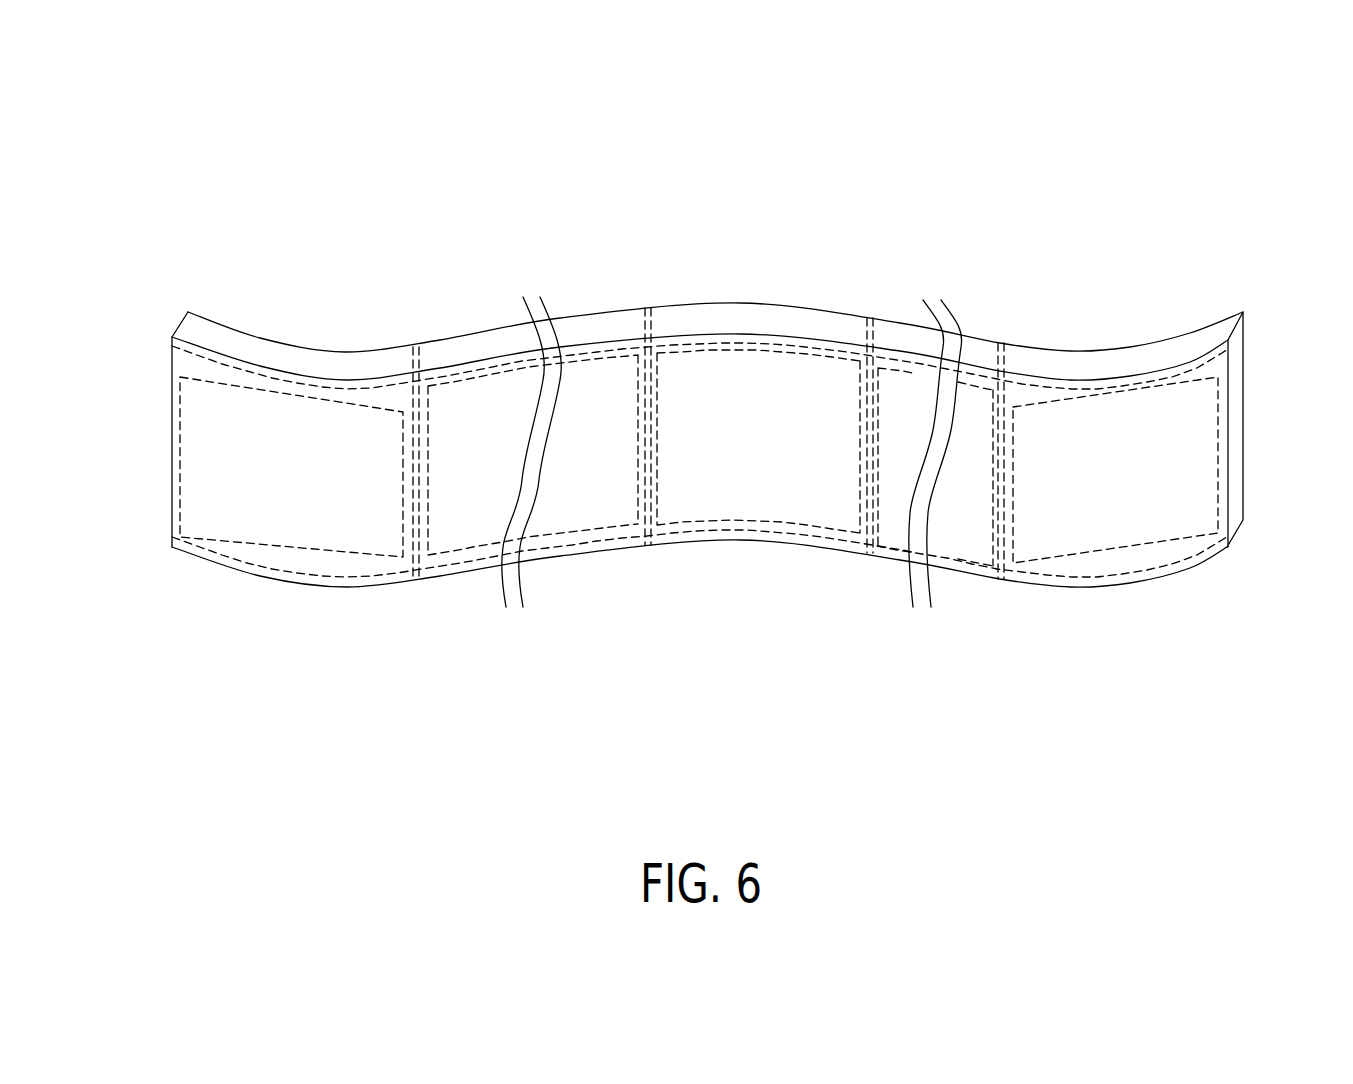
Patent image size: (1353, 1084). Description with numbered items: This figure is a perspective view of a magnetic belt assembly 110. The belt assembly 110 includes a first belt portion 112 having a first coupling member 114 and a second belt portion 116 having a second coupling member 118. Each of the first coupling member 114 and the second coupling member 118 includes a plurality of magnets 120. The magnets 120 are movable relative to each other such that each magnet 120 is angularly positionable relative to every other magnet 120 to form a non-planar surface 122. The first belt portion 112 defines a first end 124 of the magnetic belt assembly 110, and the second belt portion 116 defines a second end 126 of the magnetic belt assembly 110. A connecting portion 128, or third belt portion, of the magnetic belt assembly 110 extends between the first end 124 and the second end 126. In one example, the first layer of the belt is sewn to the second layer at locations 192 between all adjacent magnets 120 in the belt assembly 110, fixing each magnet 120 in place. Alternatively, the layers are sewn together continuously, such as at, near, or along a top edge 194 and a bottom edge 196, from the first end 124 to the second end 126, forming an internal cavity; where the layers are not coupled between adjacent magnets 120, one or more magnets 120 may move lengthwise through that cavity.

The magnetic belt assembly 110 is at (401, 192).
The first belt portion 112 is at (221, 574).
The first coupling member 114 is at (437, 608).
The second belt portion 116 is at (1152, 591).
The second coupling member 118 is at (999, 596).
The magnets 120 is at (472, 428).
The non-planar surface 122 is at (952, 505).
The first end 124 is at (170, 554).
The second end 126 is at (1244, 549).
The connecting portion 128 is at (807, 304).
The locations 192 is at (418, 522).
The top edge 194 is at (473, 372).
The bottom edge 196 is at (477, 558).